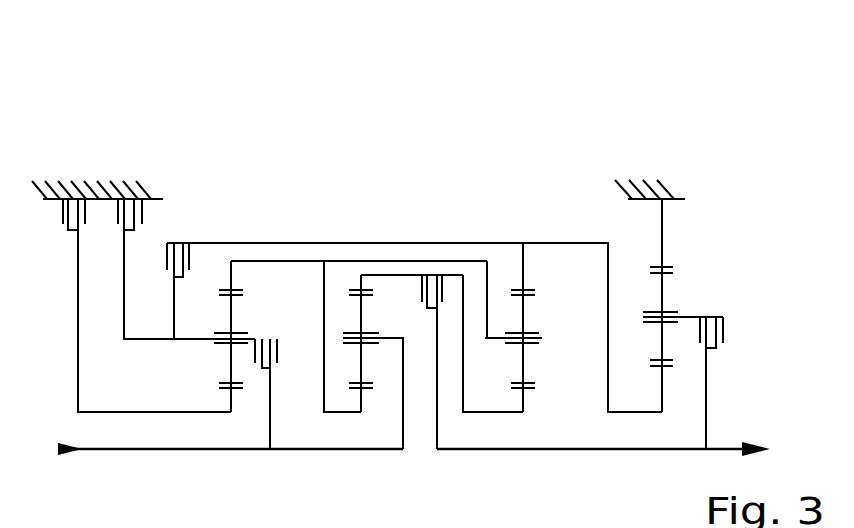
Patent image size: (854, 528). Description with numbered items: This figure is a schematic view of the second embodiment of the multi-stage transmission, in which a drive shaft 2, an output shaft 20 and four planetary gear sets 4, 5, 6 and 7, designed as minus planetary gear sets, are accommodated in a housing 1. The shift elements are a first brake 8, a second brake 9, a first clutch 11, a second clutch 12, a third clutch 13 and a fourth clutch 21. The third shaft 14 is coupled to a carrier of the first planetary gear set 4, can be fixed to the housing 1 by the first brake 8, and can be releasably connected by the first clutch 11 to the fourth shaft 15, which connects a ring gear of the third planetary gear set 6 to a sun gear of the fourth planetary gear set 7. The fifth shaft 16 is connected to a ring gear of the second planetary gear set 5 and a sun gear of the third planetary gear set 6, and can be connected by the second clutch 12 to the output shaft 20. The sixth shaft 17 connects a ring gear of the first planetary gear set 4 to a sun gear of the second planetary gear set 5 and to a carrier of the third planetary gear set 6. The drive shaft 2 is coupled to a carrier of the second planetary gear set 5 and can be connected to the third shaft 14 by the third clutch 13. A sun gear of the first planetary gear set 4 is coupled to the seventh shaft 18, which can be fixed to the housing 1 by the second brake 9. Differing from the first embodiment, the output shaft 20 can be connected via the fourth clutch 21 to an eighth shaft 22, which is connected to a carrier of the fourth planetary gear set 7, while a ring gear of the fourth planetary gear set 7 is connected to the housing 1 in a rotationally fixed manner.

The housing 1 is at (132, 185).
The drive shaft 2 is at (173, 452).
The first planetary gear set 4 is at (233, 168).
The second planetary gear set 5 is at (362, 168).
The third planetary gear set 6 is at (525, 168).
The fourth planetary gear set 7 is at (662, 168).
The first brake 8 is at (125, 199).
The second brake 9 is at (78, 199).
The first clutch 11 is at (180, 243).
The second clutch 12 is at (433, 277).
The third clutch 13 is at (268, 352).
The third shaft 14 is at (122, 322).
The fourth shaft 15 is at (296, 243).
The fifth shaft 16 is at (493, 412).
The sixth shaft 17 is at (345, 412).
The seventh shaft 18 is at (77, 343).
The output shaft 20 is at (557, 450).
The fourth clutch 21 is at (707, 342).
The eighth shaft 22 is at (697, 320).